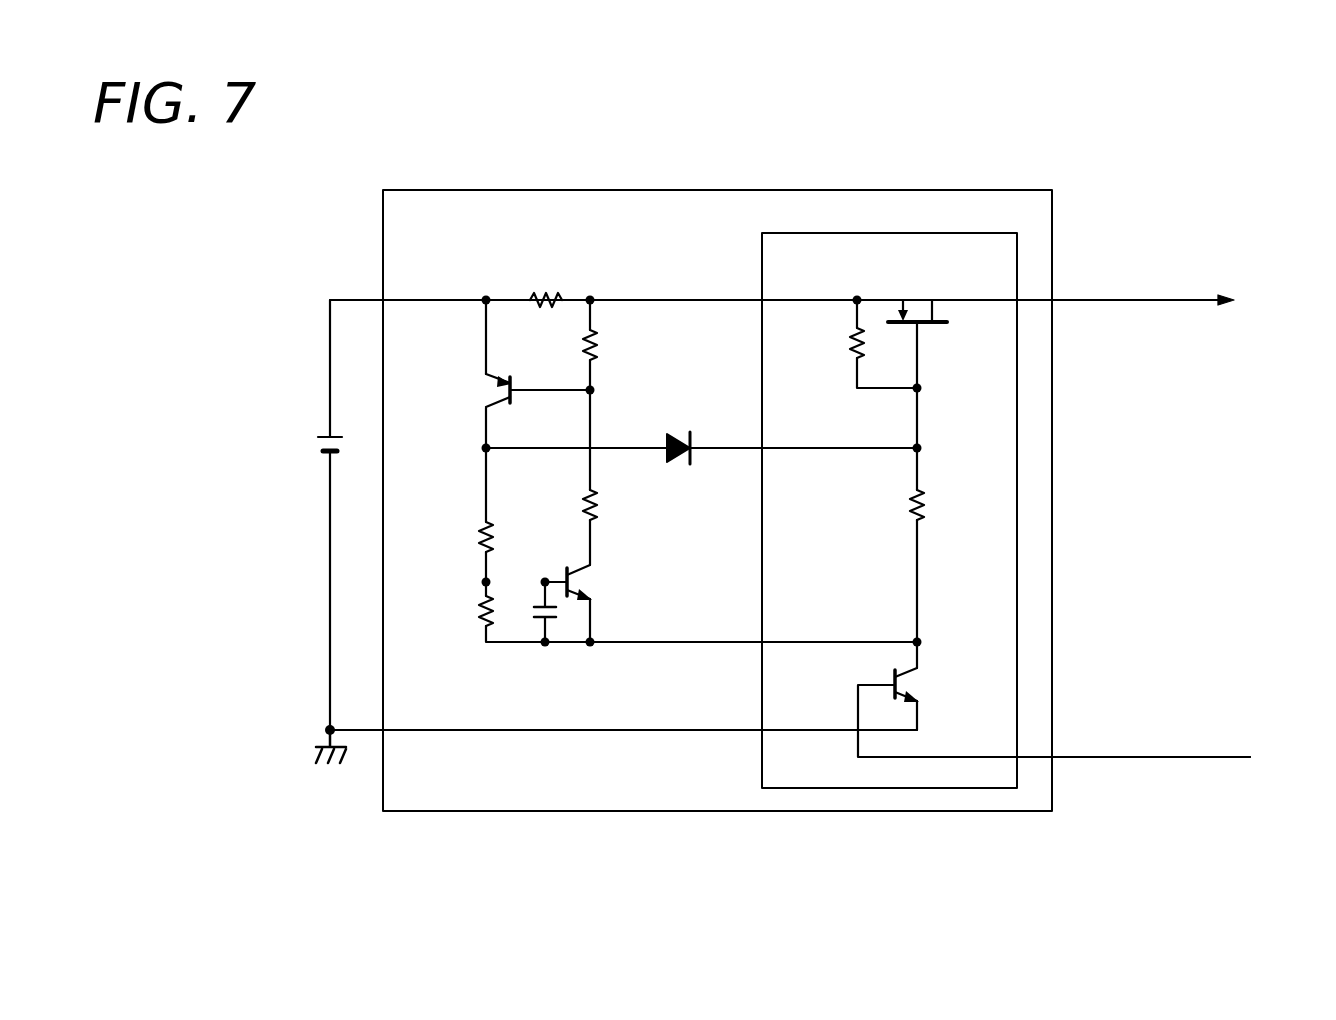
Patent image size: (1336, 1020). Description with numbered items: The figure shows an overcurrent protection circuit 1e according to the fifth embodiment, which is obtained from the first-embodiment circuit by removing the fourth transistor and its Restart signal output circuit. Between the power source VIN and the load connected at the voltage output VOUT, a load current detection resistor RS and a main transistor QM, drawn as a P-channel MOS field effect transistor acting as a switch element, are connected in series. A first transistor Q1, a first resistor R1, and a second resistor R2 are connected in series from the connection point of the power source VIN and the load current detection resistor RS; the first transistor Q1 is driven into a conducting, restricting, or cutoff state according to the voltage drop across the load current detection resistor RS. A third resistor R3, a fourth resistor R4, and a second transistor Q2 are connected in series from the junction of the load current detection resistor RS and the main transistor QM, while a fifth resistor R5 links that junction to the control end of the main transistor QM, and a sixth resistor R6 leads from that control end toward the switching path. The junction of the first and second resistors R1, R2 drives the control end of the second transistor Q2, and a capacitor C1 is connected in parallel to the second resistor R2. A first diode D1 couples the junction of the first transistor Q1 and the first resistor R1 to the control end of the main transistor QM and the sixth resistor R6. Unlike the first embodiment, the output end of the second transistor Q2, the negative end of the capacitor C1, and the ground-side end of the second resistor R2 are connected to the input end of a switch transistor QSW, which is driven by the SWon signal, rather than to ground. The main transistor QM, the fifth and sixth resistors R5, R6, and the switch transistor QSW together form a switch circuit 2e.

The overcurrent protection circuit 1e is at (717, 500).
The switch circuit 2e is at (889, 493).
The load current detection resistor RS is at (547, 279).
The first resistor R1 is at (458, 535).
The second resistor R2 is at (458, 617).
The third resistor R3 is at (569, 354).
The fourth resistor R4 is at (621, 506).
The fifth resistor R5 is at (833, 348).
The sixth resistor R6 is at (940, 506).
The capacitor C1 is at (528, 625).
The first diode D1 is at (686, 466).
The first transistor Q1 is at (467, 386).
The second transistor Q2 is at (607, 589).
The main transistor QM is at (902, 286).
The switch transistor QSW is at (946, 685).
The power source VIN is at (293, 443).
The voltage output VOUT is at (1200, 284).
The switch-on signal terminal SWon is at (1214, 751).